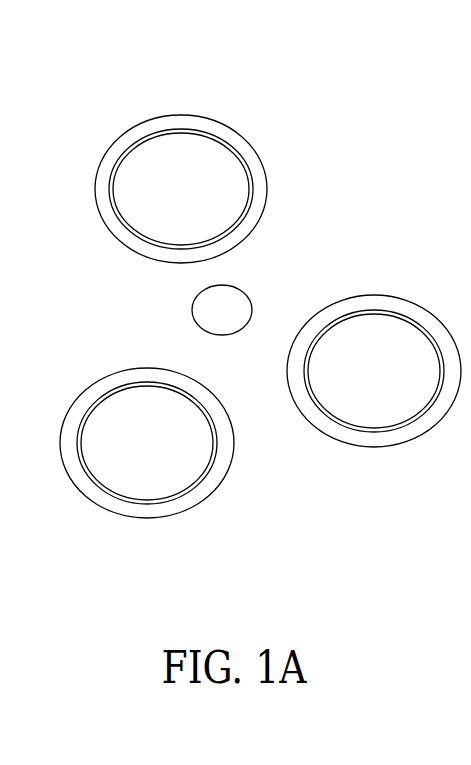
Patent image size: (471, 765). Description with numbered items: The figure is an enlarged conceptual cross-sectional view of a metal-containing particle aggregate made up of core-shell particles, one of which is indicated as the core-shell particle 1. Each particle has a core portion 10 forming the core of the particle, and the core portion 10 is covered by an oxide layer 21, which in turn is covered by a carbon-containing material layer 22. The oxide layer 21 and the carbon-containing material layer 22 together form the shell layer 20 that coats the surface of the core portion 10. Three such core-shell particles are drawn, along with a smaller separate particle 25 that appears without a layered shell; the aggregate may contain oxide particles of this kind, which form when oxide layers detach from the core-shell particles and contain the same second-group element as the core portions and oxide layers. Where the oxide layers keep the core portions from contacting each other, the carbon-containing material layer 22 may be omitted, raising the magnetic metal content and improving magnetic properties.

The biomass pellet 1 is at (255, 163).
The core portion 10 is at (234, 175).
The shell layer 20 is at (262, 197).
The oxide layer 21 is at (234, 216).
The carbon-containing material layer 22 is at (229, 242).
The core 25 is at (205, 305).